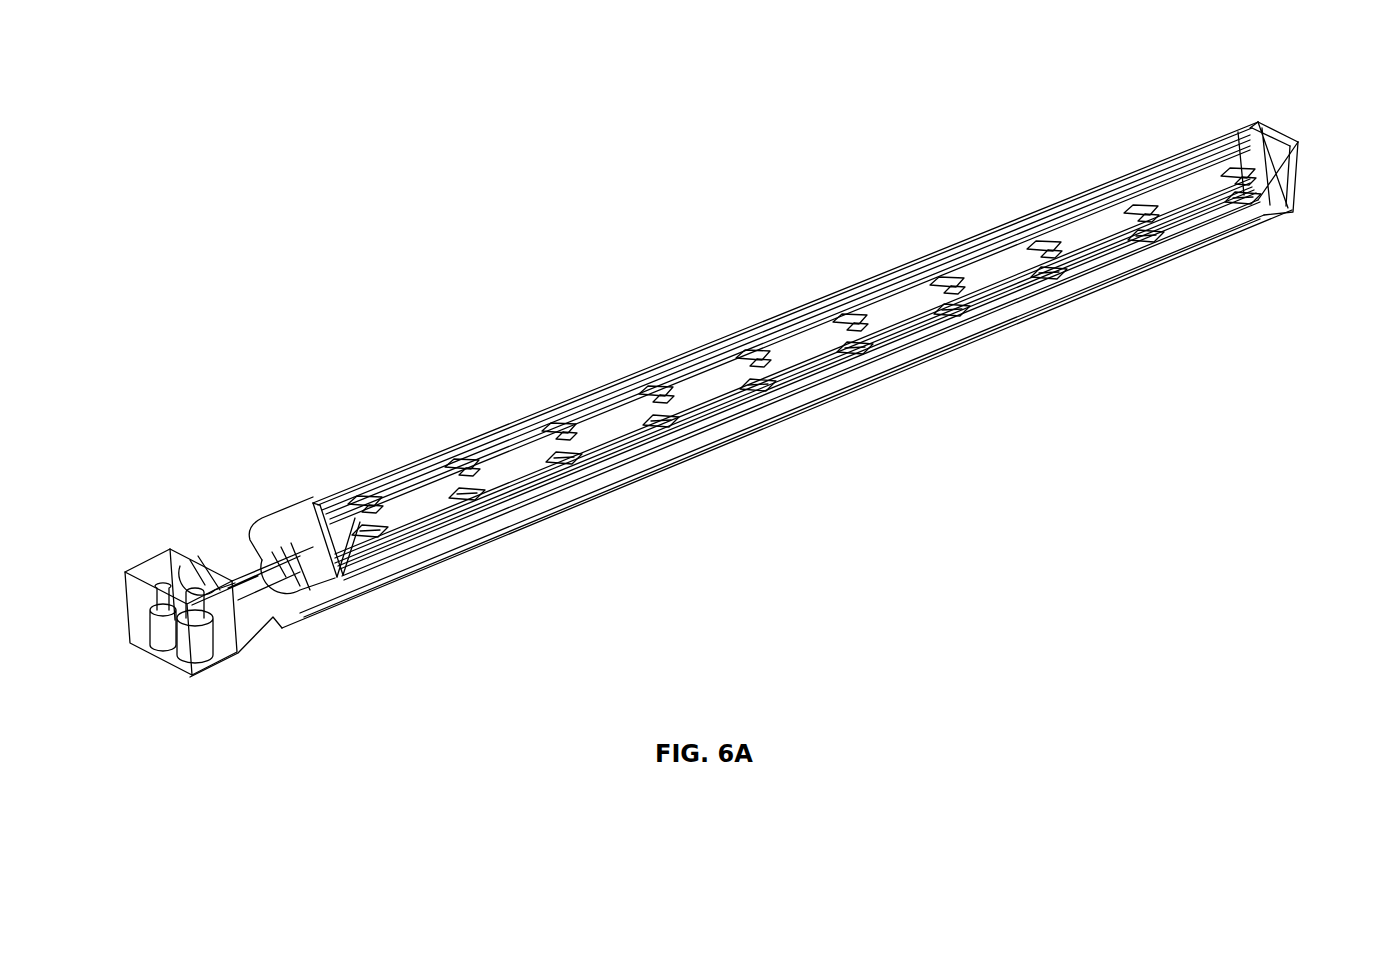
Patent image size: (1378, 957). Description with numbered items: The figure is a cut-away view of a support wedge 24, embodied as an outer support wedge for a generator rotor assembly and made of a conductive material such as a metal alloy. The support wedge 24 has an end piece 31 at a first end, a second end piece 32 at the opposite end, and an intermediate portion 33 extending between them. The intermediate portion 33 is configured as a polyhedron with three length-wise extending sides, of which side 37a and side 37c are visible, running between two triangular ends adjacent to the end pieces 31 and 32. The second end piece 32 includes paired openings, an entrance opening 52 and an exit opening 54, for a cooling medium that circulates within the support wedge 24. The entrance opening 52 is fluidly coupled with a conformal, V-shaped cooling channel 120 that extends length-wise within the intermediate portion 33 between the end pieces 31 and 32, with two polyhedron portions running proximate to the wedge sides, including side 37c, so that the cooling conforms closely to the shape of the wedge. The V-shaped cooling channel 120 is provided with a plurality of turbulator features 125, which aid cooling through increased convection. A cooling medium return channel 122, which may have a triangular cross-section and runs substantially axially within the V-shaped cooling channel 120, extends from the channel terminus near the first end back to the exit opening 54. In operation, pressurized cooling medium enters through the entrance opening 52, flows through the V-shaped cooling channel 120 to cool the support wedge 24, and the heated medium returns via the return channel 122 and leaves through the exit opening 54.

The support wedge 24 is at (243, 302).
The end piece 31 is at (1300, 185).
The end piece 32 is at (158, 573).
The intermediate portion 33 is at (851, 280).
The length-wise extending side 37a is at (1260, 122).
The length-wise extending side 37c is at (1238, 230).
The entrance opening 52 is at (192, 642).
The exit opening 54 is at (170, 640).
The V-shaped cooling channel 120 is at (468, 440).
The cooling medium return channel 122 is at (318, 497).
The turbulator features 125 is at (972, 300).